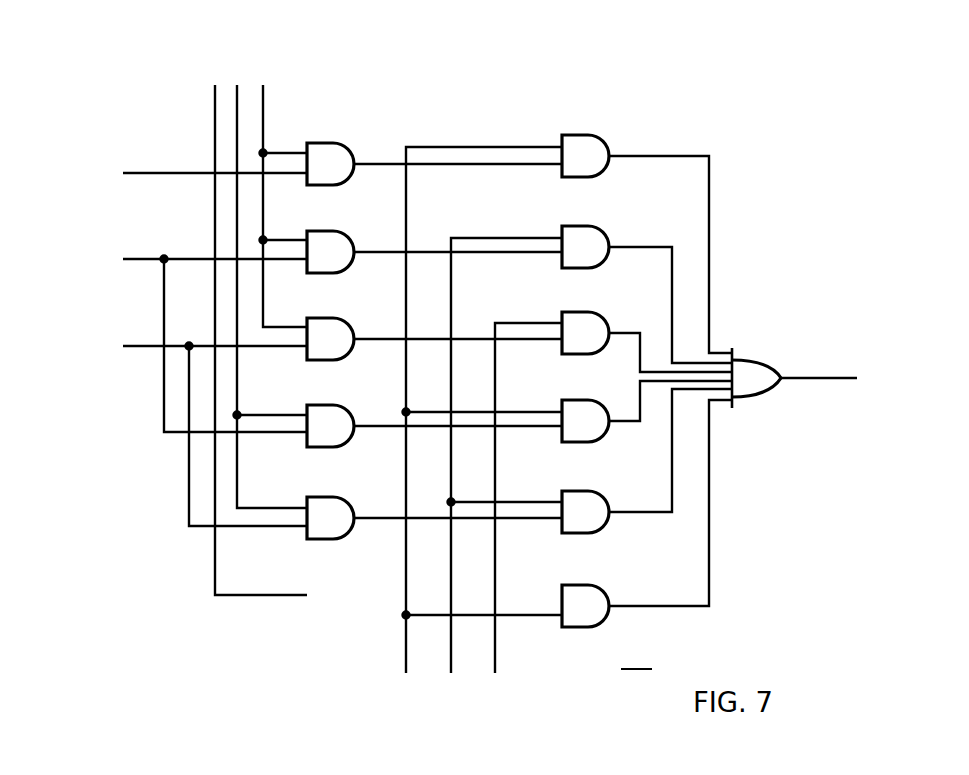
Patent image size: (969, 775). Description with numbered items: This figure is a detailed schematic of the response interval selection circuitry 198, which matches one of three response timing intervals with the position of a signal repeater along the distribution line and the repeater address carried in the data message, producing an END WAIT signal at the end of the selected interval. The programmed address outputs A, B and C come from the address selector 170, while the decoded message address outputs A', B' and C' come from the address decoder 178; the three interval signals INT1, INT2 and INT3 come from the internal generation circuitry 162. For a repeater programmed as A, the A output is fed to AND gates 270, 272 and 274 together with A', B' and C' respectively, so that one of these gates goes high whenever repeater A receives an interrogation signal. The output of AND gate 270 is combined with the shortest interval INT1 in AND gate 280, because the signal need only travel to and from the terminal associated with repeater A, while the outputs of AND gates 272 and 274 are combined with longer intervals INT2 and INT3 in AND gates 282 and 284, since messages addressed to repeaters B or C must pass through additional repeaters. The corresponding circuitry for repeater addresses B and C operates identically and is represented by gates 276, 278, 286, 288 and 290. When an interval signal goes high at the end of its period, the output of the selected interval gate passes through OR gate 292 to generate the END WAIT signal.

The internal generation circuitry 162 is at (507, 675).
The address selector 170 is at (272, 85).
The address decoder 178 is at (114, 358).
The interval selection circuitry 198 is at (636, 658).
The AND gate 270 is at (332, 144).
The AND gate 272 is at (346, 232).
The AND gate 274 is at (346, 320).
The AND gate 276 is at (346, 407).
The AND gate 278 is at (346, 500).
The AND gate 280 is at (598, 136).
The AND gate 282 is at (603, 230).
The AND gate 284 is at (596, 316).
The AND gate 286 is at (586, 402).
The AND gate 288 is at (599, 492).
The AND gate 290 is at (600, 586).
The OR gate 292 is at (759, 360).